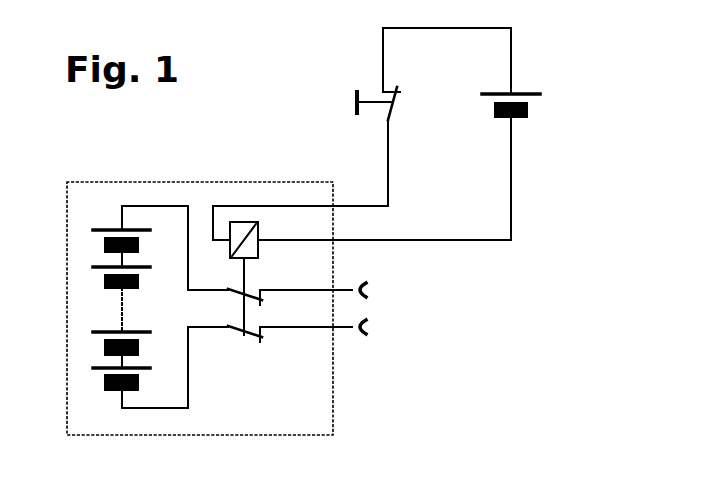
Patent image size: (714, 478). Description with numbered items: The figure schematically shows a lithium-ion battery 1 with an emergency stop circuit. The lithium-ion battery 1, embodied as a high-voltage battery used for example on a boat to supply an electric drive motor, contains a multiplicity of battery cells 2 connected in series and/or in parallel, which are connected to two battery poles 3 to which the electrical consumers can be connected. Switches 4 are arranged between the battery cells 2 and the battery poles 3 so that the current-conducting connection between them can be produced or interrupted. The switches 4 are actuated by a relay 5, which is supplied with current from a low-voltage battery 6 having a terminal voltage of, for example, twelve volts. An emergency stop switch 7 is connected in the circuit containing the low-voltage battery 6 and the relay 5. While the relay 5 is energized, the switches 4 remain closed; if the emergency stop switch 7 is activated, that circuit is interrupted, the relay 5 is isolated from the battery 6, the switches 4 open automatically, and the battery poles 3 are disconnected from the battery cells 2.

The lithium-ion battery 1 is at (200, 329).
The battery cells 2 is at (119, 310).
The battery poles 3 is at (379, 313).
The switches 4 is at (242, 313).
The relay 5 is at (262, 234).
The low-voltage battery 6 is at (519, 112).
The emergency stop switch 7 is at (364, 97).